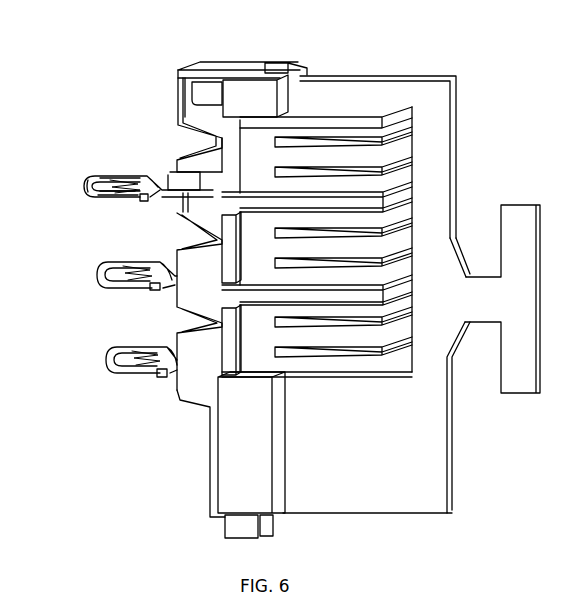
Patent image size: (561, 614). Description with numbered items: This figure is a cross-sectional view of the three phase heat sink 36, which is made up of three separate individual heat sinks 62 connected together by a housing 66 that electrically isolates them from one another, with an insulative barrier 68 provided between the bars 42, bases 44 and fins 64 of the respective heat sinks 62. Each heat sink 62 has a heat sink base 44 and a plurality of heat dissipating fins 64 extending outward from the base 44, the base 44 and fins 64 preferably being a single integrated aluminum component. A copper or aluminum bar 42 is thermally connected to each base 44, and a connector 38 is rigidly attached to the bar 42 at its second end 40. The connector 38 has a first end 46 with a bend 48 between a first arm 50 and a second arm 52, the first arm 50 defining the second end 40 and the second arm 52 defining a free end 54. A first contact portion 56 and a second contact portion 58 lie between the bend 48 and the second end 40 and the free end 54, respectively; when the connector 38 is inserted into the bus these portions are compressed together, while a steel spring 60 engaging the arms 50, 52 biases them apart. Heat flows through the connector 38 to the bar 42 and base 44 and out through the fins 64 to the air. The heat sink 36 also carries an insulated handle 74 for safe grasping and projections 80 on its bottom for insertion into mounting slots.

The three phase heat sink 36 is at (402, 40).
The connector 38 is at (150, 172).
The second end 40 is at (180, 208).
The bar 42 is at (182, 168).
The heat sink base 44 is at (240, 122).
The first end 46 is at (85, 200).
The bend 48 is at (86, 178).
The first arm 50 is at (105, 176).
The second arm 52 is at (100, 197).
The free end 54 is at (146, 200).
The first contact portion 56 is at (120, 180).
The second contact portion 58 is at (122, 197).
The spring 60 is at (155, 288).
The heat sink 62 is at (432, 155).
The fins 64 is at (345, 152).
The housing 66 is at (355, 80).
The insulative barrier 68 is at (395, 215).
The insulated handle 74 is at (525, 385).
The projections 80 is at (225, 528).